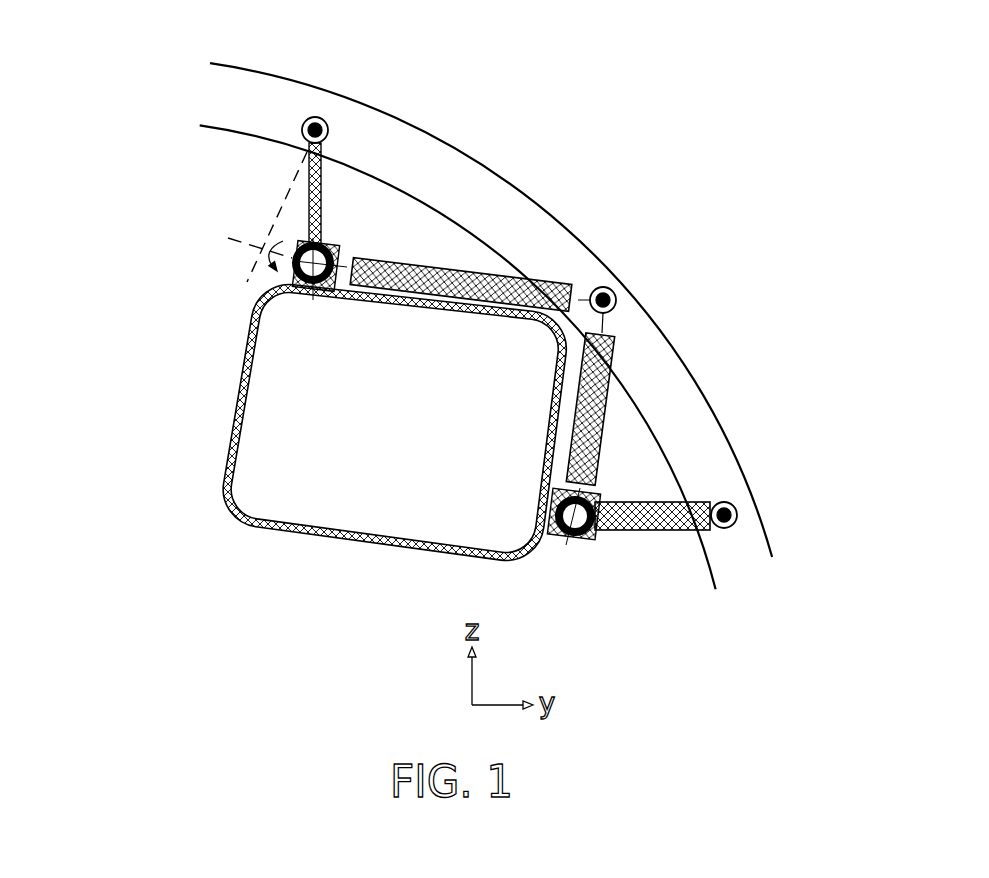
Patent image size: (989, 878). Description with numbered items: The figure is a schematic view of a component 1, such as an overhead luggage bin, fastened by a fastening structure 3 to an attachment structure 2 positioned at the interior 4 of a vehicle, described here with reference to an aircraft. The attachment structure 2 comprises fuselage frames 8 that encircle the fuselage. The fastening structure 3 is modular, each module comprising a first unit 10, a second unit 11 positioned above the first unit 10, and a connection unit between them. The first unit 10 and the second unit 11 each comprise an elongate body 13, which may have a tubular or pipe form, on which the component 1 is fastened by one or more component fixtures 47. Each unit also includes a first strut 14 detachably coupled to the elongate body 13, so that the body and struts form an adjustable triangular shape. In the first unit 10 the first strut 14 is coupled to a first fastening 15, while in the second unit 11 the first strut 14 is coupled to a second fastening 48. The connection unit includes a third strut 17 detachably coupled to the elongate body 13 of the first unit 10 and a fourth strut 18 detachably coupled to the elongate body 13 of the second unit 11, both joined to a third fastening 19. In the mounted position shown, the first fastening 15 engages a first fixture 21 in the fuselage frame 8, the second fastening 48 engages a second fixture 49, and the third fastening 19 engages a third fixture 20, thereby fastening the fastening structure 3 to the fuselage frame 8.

The component 1 is at (338, 373).
The attachment structure 2 is at (637, 340).
The fastening structure 3 is at (448, 258).
The interior 4 is at (313, 603).
The fuselage frame 8 is at (507, 190).
The first unit 10 is at (643, 467).
The second unit 11 is at (273, 167).
The elongate body 13 is at (293, 247).
The first strut 14 is at (323, 198).
The first fastening 15 is at (734, 503).
The third strut 17 is at (600, 437).
The fourth strut 18 is at (510, 277).
The third fastening 19 is at (605, 288).
The third fixture 20 is at (618, 322).
The first fixture 21 is at (740, 517).
The component fixture 47 is at (328, 243).
The second fastening 48 is at (313, 117).
The second fixture 49 is at (328, 133).